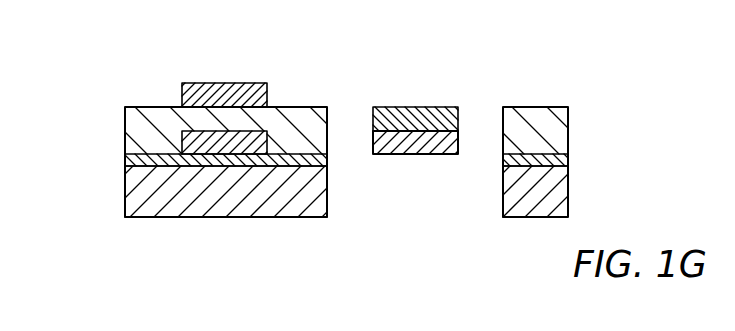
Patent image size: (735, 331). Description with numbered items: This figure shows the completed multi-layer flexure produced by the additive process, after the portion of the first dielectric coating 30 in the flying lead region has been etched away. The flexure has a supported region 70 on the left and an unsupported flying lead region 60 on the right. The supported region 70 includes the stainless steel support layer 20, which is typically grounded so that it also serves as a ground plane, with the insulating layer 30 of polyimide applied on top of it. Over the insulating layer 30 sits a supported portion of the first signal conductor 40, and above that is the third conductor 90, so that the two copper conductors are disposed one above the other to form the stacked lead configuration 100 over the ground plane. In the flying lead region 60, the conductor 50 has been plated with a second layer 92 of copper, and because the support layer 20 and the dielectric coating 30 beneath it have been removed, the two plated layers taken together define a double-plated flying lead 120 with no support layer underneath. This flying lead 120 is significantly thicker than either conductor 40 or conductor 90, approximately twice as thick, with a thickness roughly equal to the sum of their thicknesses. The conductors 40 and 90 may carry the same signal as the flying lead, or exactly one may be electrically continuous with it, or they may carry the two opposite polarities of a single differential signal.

The support layer 20 is at (132, 182).
The first dielectric coating 30 is at (133, 161).
The first signal conductor 40 is at (177, 134).
The second signal conductor 50 is at (420, 154).
The flying lead region 60 is at (567, 240).
The supported region 70 is at (323, 242).
The third conductor 90 is at (205, 82).
The second layer of copper 92 is at (418, 107).
The stacked lead configuration 100 is at (296, 76).
The flying lead 120 is at (390, 176).